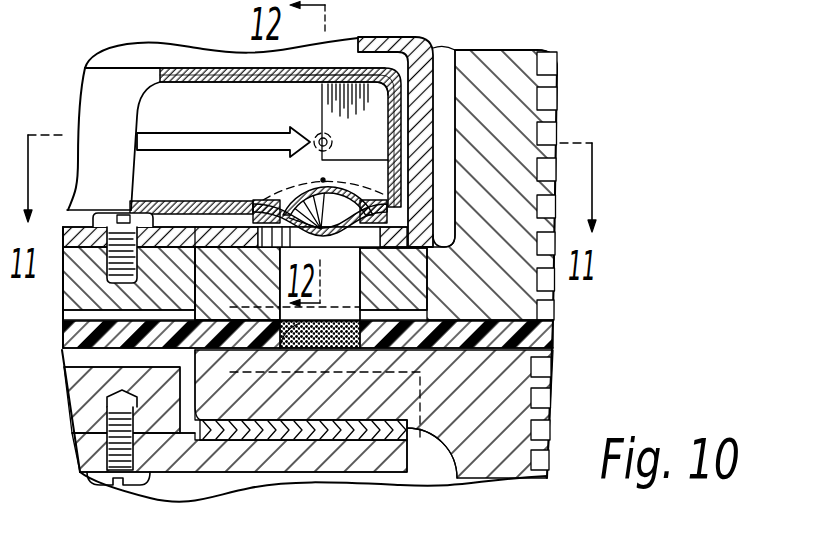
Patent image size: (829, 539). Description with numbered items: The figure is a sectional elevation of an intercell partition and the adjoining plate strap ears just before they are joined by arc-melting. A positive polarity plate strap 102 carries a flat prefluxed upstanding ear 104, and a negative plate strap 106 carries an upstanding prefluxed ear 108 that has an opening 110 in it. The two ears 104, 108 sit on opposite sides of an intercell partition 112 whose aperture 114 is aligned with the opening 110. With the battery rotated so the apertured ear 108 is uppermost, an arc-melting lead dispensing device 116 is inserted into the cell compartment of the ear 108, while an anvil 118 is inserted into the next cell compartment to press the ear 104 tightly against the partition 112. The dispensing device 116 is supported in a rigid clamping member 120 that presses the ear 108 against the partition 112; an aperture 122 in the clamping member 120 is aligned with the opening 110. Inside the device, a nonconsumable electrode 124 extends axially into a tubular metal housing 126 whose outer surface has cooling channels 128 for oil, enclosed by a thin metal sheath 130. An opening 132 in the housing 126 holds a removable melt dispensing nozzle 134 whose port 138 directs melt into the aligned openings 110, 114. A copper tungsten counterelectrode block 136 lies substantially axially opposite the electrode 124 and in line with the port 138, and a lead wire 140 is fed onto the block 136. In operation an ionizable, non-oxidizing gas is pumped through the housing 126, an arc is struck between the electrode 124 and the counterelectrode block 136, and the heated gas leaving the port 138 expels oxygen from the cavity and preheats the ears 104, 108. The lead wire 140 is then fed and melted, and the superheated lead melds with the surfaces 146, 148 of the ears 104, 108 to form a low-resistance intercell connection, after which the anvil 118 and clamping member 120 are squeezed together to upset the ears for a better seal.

The positive polarity plate strap 102 is at (507, 473).
The upstanding ear 104 is at (363, 407).
The negative plate strap 106 is at (497, 65).
The upstanding ear 108 is at (219, 268).
The opening 110 is at (362, 277).
The intercell partition 112 is at (62, 340).
The aperture 114 is at (277, 368).
The arc-melting lead dispensing device 116 is at (130, 66).
The anvil 118 is at (180, 473).
The clamping member 120 is at (428, 46).
The aperture 122 is at (237, 283).
The nonconsumable electrode 124 is at (220, 133).
The tubular metal housing 126 is at (186, 68).
The cooling channels 128 is at (218, 68).
The thin metal sheath 130 is at (262, 68).
The opening 132 is at (343, 186).
The melt dispensing nozzle 134 is at (317, 226).
The copper tungsten counterelectrode block 136 is at (351, 72).
The port 138 is at (312, 235).
The lead wire 140 is at (316, 136).
The surface 146 is at (358, 300).
The surface 148 is at (254, 293).